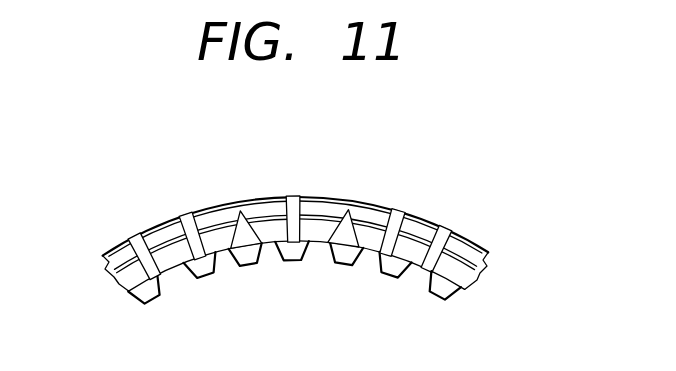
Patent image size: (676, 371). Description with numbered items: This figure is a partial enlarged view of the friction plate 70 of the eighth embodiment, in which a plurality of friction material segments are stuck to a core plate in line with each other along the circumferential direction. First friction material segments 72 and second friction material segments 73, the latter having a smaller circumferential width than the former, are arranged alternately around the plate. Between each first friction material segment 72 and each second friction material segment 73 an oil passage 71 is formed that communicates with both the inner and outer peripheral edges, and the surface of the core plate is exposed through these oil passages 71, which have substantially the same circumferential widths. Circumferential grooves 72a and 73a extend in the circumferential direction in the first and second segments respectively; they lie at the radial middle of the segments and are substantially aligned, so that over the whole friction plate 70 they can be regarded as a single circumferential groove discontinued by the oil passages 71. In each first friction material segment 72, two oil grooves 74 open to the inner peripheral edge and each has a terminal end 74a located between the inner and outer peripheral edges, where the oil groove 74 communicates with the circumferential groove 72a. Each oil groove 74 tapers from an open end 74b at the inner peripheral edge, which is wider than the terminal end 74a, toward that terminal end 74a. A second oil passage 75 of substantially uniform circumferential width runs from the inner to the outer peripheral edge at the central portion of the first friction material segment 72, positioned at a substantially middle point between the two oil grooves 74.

The friction plate 70 is at (328, 208).
The oil passage 71 is at (182, 214).
The first friction material segment 72 is at (301, 205).
The circumferential groove 72a is at (387, 208).
The second friction material segment 73 is at (425, 258).
The circumferential groove 73a is at (445, 229).
The oil groove 74 is at (355, 241).
The terminal end 74a is at (427, 158).
The open end 74b is at (345, 262).
The second oil passage 75 is at (296, 192).